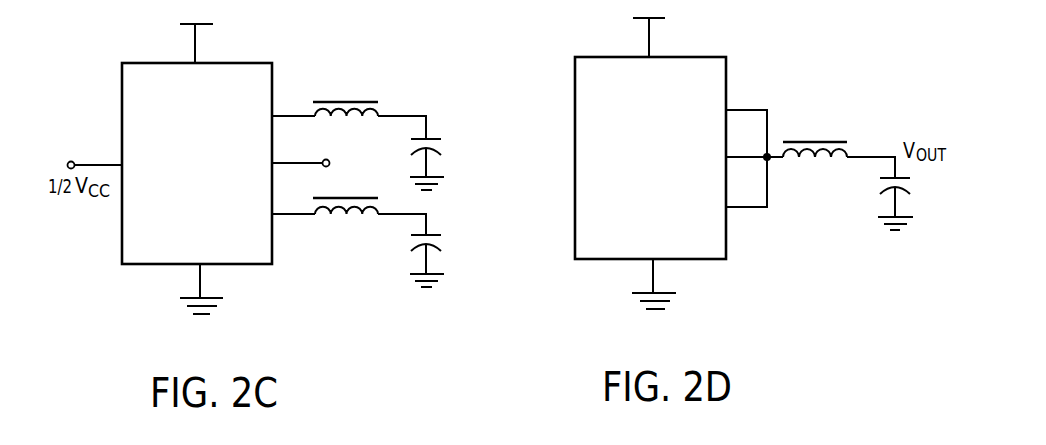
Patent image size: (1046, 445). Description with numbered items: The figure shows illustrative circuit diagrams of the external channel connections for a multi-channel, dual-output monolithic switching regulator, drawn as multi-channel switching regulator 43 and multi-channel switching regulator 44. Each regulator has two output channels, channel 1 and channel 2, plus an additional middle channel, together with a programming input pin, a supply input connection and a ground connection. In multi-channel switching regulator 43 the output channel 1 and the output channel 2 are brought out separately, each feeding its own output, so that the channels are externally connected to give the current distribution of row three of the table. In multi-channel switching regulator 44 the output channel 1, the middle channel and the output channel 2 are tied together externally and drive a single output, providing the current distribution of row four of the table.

In FIG. 2C, the multi-channel switching regulator 43 is at (135, 63).
In FIG. 2D, the multi-channel switching regulator 44 is at (591, 57).
In FIG. 2C, the channel 1 output 1 is at (370, 141).
In FIG. 2D, the channel 1 output 1 is at (735, 132).
In FIG. 2C, the channel 2 output 2 is at (370, 242).
In FIG. 2D, the channel 2 output 2 is at (737, 190).